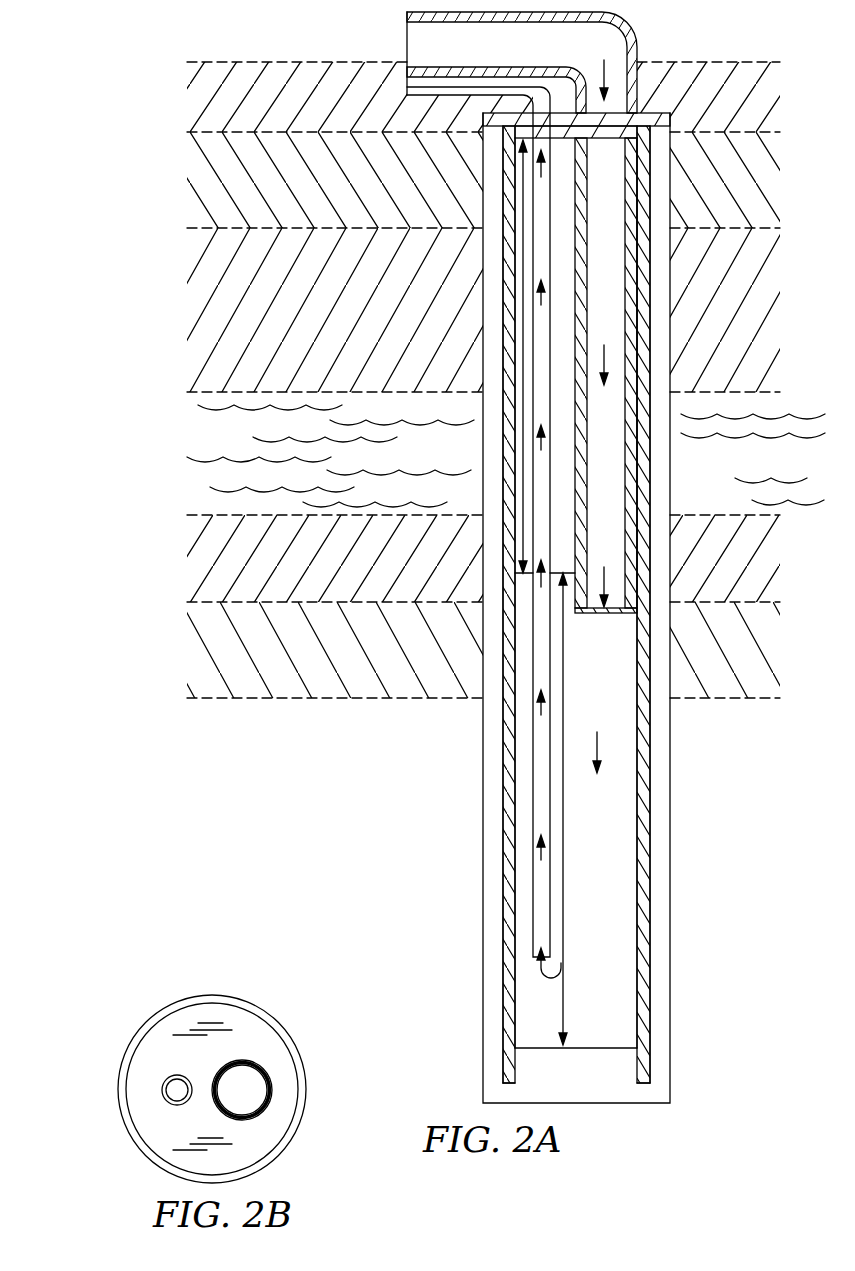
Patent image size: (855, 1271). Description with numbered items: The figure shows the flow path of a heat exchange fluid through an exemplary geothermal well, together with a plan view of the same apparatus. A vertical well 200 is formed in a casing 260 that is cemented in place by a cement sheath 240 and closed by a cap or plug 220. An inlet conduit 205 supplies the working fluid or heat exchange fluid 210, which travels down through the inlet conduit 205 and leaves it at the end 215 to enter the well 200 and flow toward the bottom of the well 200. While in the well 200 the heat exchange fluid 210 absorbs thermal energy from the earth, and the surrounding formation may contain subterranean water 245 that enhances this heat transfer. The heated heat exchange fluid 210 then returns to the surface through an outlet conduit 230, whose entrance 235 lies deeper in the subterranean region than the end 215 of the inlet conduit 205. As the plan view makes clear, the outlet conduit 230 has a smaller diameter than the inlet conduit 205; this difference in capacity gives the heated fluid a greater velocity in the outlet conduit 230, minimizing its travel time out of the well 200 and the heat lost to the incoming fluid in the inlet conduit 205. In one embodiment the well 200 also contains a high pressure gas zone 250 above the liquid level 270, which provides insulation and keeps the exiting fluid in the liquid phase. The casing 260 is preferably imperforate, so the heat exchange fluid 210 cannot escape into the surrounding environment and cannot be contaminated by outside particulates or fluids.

In FIG. 2A, the vertical well 200 is at (686, 112).
In FIG. 2B, the vertical well 200 is at (263, 1032).
In FIG. 2A, the inlet conduit 205 is at (650, 35).
In FIG. 2B, the inlet conduit 205 is at (268, 1102).
In FIG. 2A, the heat exchange fluid 210 is at (605, 352).
In FIG. 2A, the end of inlet conduit 215 is at (660, 582).
In FIG. 2A, the cap or plug 220 is at (573, 1085).
In FIG. 2A, the outlet conduit 230 is at (545, 757).
In FIG. 2B, the outlet conduit 230 is at (163, 1090).
In FIG. 2A, the entrance of outlet conduit 235 is at (545, 962).
In FIG. 2A, the cement sheath 240 is at (672, 203).
In FIG. 2A, the subterranean water 245 is at (695, 452).
In FIG. 2A, the high pressure gas zone 250 is at (502, 447).
In FIG. 2A, the casing 260 is at (658, 295).
In FIG. 2A, the liquid level 270 is at (560, 575).